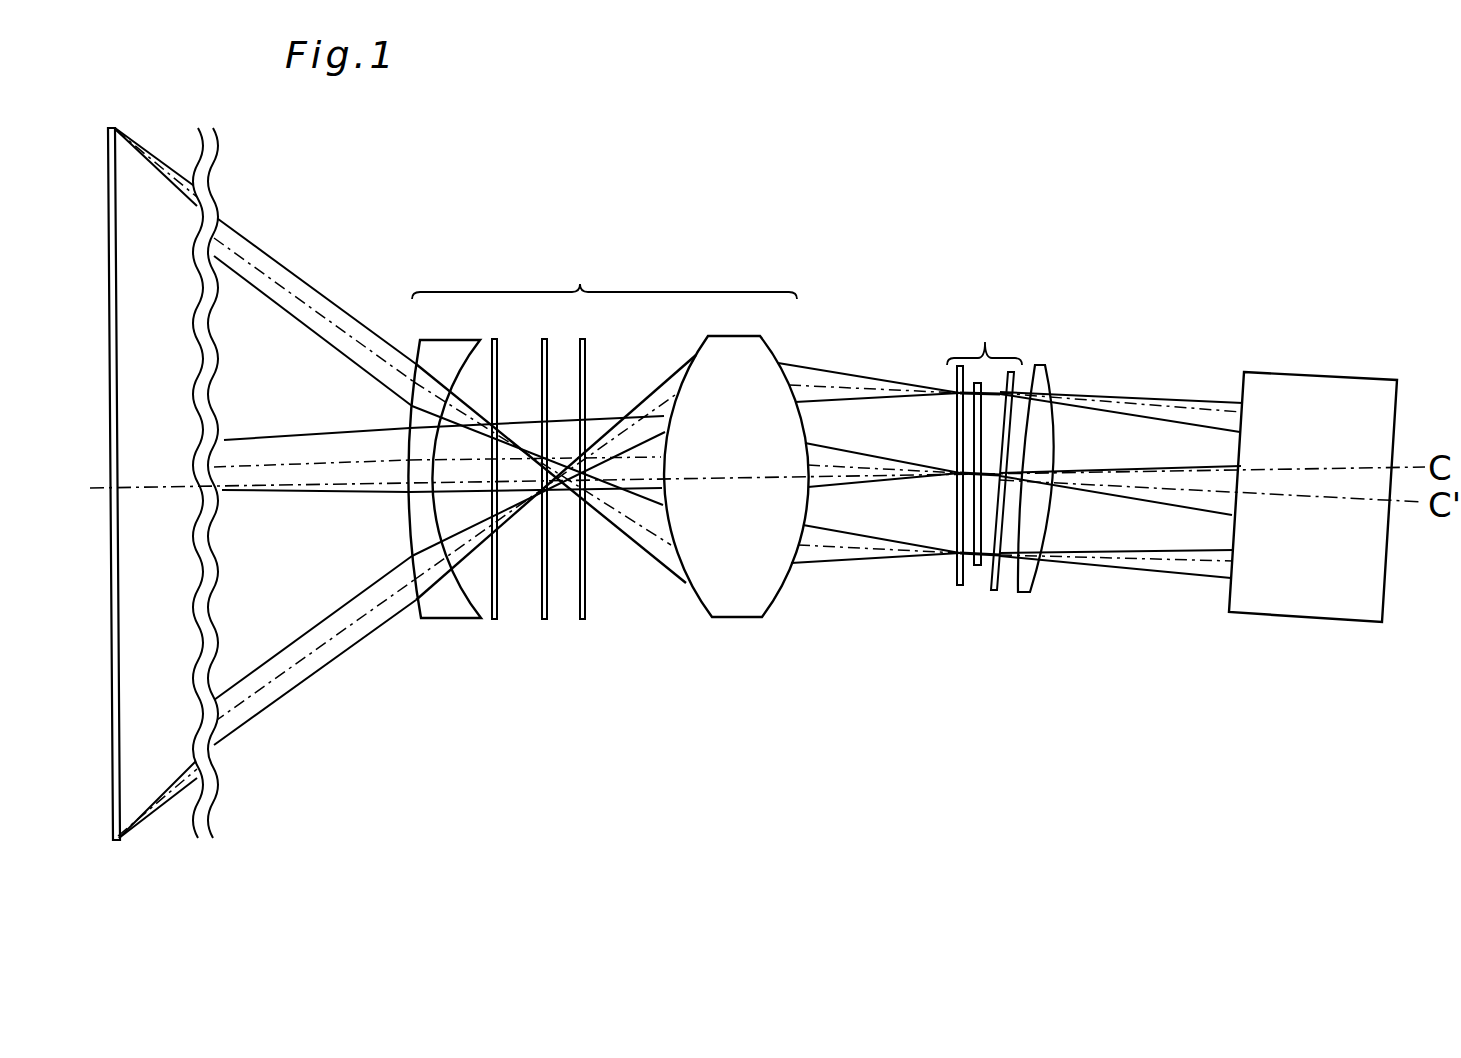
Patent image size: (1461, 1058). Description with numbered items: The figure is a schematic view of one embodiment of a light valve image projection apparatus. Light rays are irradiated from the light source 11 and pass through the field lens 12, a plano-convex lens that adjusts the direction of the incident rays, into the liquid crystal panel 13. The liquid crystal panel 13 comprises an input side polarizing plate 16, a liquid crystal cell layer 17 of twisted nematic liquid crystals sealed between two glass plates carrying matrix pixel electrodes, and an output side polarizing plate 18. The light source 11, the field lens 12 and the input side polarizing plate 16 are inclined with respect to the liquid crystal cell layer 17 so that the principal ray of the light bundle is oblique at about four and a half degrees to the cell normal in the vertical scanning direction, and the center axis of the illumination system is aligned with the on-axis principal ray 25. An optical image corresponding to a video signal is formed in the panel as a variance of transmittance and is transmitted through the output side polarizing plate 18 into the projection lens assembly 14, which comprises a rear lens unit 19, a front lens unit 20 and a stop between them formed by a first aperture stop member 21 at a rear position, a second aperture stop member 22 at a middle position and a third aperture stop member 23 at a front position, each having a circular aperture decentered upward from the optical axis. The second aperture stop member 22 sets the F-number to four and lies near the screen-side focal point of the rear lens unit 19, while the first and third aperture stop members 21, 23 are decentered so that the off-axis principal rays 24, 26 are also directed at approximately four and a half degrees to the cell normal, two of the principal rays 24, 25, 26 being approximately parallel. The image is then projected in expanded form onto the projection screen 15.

The light source 11 is at (1284, 385).
The field lens 12 is at (1048, 373).
The liquid crystal panel 13 is at (979, 499).
The projection lens assembly 14 is at (602, 491).
The projection screen 15 is at (108, 170).
The input side polarizing plate 16 is at (995, 592).
The liquid crystal cell layer 17 is at (978, 568).
The output side polarizing plate 18 is at (960, 588).
The rear lens unit 19 is at (745, 616).
The front lens unit 20 is at (443, 616).
The first aperture stop member 21 is at (583, 620).
The second aperture stop member 22 is at (545, 620).
The third aperture stop member 23 is at (495, 620).
The principal ray 24 is at (817, 383).
The principal ray 25 is at (880, 465).
The principal ray 26 is at (855, 547).